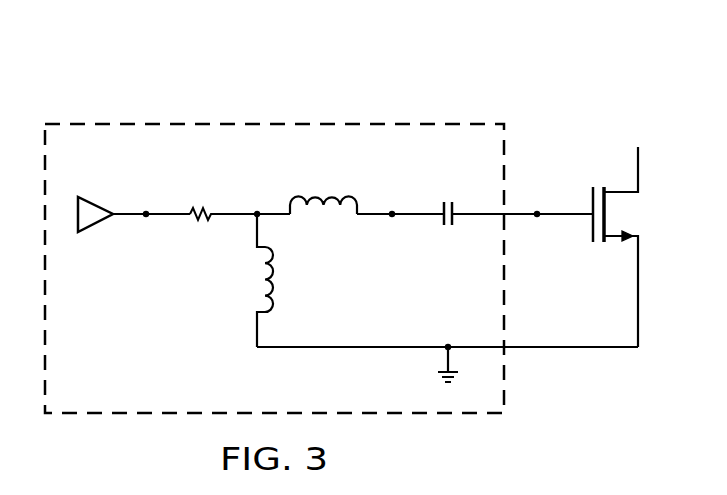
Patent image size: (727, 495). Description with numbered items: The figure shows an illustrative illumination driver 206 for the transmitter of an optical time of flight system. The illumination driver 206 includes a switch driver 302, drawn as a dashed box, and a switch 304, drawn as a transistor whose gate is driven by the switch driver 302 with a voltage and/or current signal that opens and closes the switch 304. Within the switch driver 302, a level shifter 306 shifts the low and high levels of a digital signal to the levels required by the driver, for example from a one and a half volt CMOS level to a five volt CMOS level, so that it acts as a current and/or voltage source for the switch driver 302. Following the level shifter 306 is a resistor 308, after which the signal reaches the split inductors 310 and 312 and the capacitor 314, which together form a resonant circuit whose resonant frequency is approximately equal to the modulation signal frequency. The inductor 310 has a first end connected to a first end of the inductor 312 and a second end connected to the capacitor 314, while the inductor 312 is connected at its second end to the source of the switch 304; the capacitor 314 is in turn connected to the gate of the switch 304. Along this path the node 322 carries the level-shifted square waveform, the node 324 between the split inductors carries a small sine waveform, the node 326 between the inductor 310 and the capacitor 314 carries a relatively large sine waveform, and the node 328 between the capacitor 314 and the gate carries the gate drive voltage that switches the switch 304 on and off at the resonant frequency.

The illumination driver 206 is at (548, 83).
The switch driver 302 is at (261, 124).
The switch 304 is at (590, 197).
The level shifter 306 is at (96, 206).
The resistor 308 is at (201, 206).
The inductor 310 is at (318, 194).
The inductor 312 is at (275, 290).
The capacitor 314 is at (449, 200).
The node 322 is at (143, 220).
The node 324 is at (252, 220).
The node 326 is at (394, 220).
The node 328 is at (538, 220).